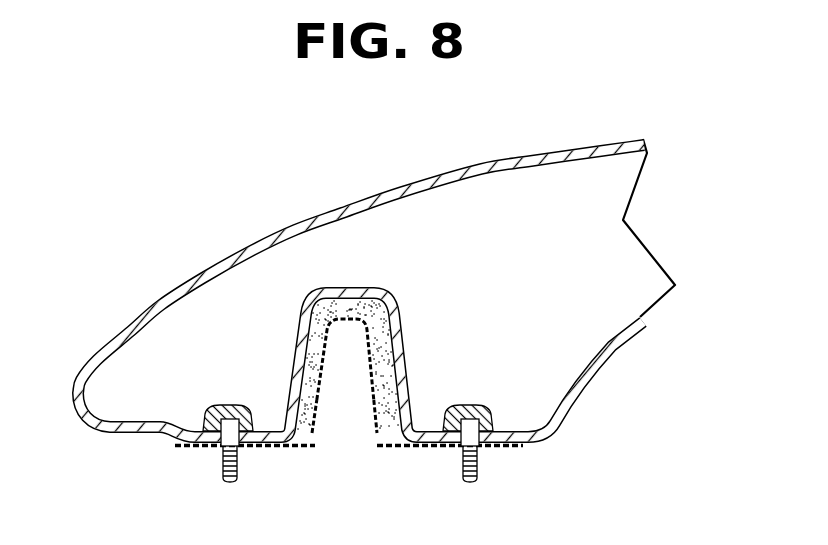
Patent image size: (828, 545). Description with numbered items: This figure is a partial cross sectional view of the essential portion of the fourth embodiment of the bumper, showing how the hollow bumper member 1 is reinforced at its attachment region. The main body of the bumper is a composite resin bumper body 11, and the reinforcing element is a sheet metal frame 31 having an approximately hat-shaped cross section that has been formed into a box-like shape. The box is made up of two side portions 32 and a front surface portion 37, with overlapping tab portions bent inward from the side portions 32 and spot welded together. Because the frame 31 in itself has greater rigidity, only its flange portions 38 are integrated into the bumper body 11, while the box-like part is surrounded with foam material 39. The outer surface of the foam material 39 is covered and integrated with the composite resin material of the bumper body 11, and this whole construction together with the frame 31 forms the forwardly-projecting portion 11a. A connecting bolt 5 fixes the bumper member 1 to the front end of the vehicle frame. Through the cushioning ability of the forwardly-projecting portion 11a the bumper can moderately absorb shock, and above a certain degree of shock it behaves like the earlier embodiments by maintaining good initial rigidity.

The bumper member 1 is at (367, 292).
The bumper body 11 is at (360, 292).
The forwardly-projecting portion 11a is at (397, 283).
The frame 31 is at (378, 348).
The foam material 39 is at (342, 302).
The front surface portion 37 is at (348, 323).
The side portions 32 is at (327, 405).
The flange portions 38 is at (200, 448).
The connecting bolt 5 is at (220, 465).